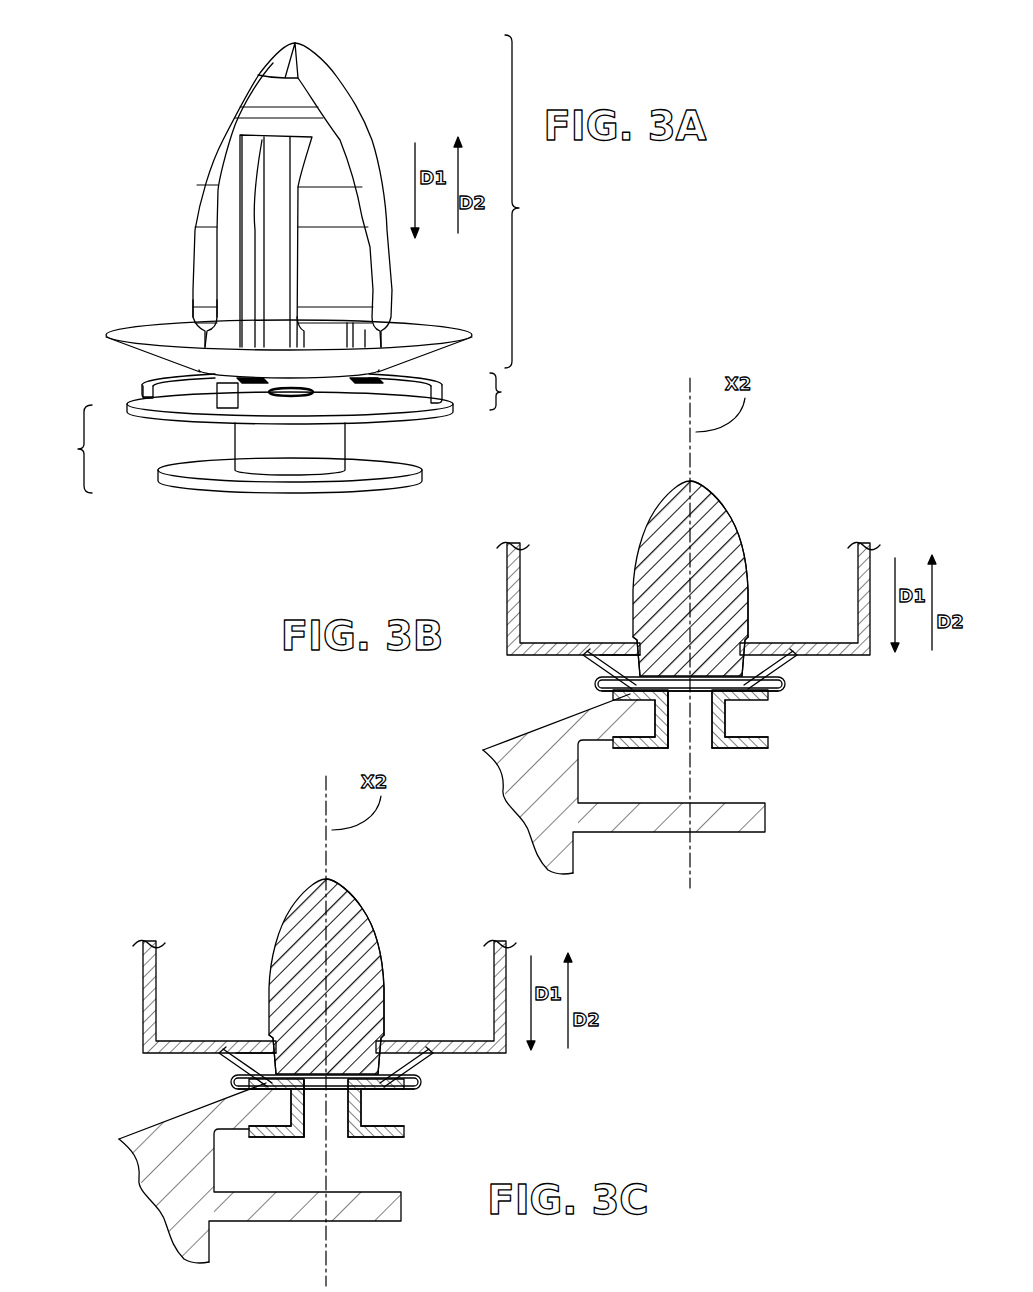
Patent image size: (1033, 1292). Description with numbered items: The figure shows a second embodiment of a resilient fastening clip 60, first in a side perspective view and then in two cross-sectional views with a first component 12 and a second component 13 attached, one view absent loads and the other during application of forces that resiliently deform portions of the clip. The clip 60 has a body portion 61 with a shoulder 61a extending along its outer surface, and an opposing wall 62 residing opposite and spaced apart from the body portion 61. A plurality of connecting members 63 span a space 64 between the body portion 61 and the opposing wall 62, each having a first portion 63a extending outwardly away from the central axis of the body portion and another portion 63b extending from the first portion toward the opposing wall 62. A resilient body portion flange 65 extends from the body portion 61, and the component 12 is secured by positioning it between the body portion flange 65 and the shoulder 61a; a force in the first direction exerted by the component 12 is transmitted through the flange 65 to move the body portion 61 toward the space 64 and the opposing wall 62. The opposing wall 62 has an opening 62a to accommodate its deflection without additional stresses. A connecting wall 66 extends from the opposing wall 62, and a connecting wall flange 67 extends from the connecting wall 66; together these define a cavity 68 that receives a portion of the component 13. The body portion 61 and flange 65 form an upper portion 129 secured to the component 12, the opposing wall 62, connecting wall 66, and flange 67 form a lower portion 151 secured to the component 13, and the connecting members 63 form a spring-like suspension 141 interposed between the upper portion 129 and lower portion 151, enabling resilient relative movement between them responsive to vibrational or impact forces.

In FIG. 3B, the component 12 is at (507, 592).
In FIG. 3C, the component 12 is at (298, 996).
In FIG. 3B, the component 13 is at (636, 816).
In FIG. 3C, the component 13 is at (260, 1173).
In FIG. 3A, the clip 60 is at (258, 76).
In FIG. 3B, the clip 60 is at (654, 505).
In FIG. 3C, the clip 60 is at (304, 958).
In FIG. 3A, the body portion 61 is at (322, 156).
In FIG. 3B, the body portion 61 is at (720, 527).
In FIG. 3C, the body portion 61 is at (376, 942).
In FIG. 3A, the shoulder 61a is at (196, 312).
In FIG. 3B, the shoulder 61a is at (745, 652).
In FIG. 3C, the shoulder 61a is at (420, 1026).
In FIG. 3A, the opposing wall 62 is at (160, 420).
In FIG. 3B, the opposing wall 62 is at (620, 698).
In FIG. 3C, the opposing wall 62 is at (243, 1108).
In FIG. 3A, the opening 62a is at (291, 397).
In FIG. 3B, the opening 62a is at (688, 693).
In FIG. 3C, the opening 62a is at (315, 1134).
In FIG. 3A, the connecting member 63 is at (272, 372).
In FIG. 3B, the connecting member 63 is at (655, 671).
In FIG. 3C, the connecting member 63 is at (291, 1069).
In FIG. 3A, the first portion 63a is at (238, 380).
In FIG. 3B, the first portion 63a is at (622, 680).
In FIG. 3C, the first portion 63a is at (273, 1067).
In FIG. 3A, the another portion 63b is at (142, 388).
In FIG. 3B, the another portion 63b is at (598, 684).
In FIG. 3C, the another portion 63b is at (246, 1081).
In FIG. 3A, the space 64 is at (202, 381).
In FIG. 3B, the space 64 is at (636, 648).
In FIG. 3C, the space 64 is at (245, 989).
In FIG. 3A, the body portion flange 65 is at (148, 333).
In FIG. 3B, the body portion flange 65 is at (612, 655).
In FIG. 3C, the body portion flange 65 is at (233, 1001).
In FIG. 3A, the connecting wall 66 is at (250, 443).
In FIG. 3B, the connecting wall 66 is at (657, 720).
In FIG. 3C, the connecting wall 66 is at (208, 1108).
In FIG. 3A, the connecting wall flange 67 is at (373, 488).
In FIG. 3B, the connecting wall flange 67 is at (742, 746).
In FIG. 3C, the connecting wall flange 67 is at (339, 1157).
In FIG. 3B, the cavity 68 is at (760, 716).
In FIG. 3C, the cavity 68 is at (417, 1132).
In FIG. 3A, the upper portion 129 is at (534, 201).
In FIG. 3A, the suspension 141 is at (518, 391).
In FIG. 3A, the lower portion 151 is at (65, 449).